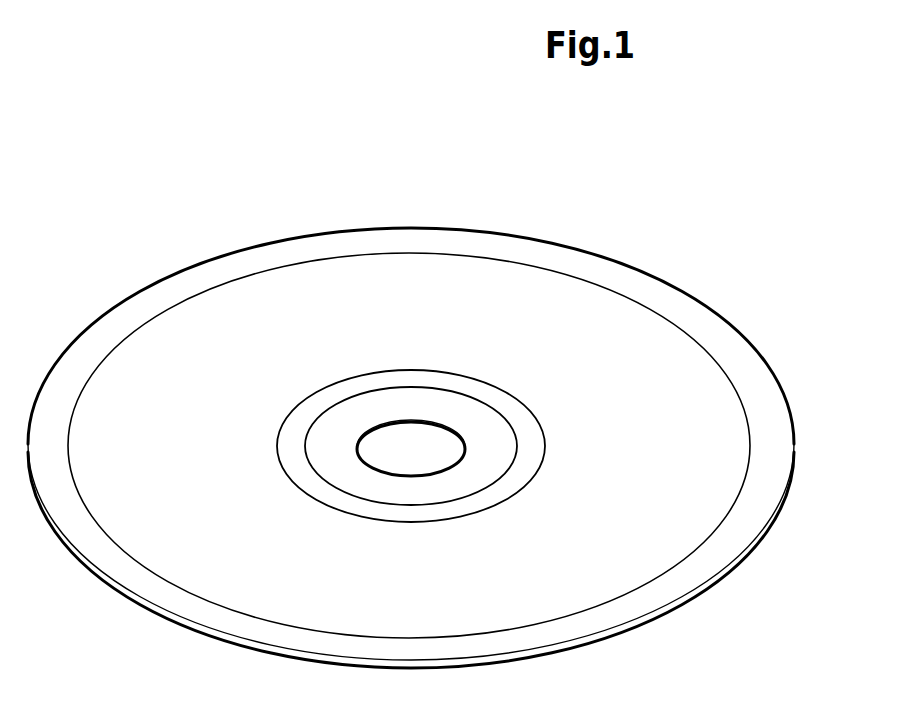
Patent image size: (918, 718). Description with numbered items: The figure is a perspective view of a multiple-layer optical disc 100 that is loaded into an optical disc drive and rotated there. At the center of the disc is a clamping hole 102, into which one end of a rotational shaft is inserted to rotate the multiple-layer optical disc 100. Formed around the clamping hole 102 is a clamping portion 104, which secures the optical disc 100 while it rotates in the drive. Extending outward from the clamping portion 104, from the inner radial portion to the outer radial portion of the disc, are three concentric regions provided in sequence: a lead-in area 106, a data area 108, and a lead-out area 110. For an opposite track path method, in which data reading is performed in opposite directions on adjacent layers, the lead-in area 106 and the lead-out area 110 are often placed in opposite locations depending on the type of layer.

The multiple-layer optical disc 100 is at (585, 236).
The clamping hole 102 is at (417, 445).
The clamping portion 104 is at (445, 408).
The lead-in area 106 is at (303, 412).
The data area 108 is at (687, 403).
The lead-out area 110 is at (687, 308).